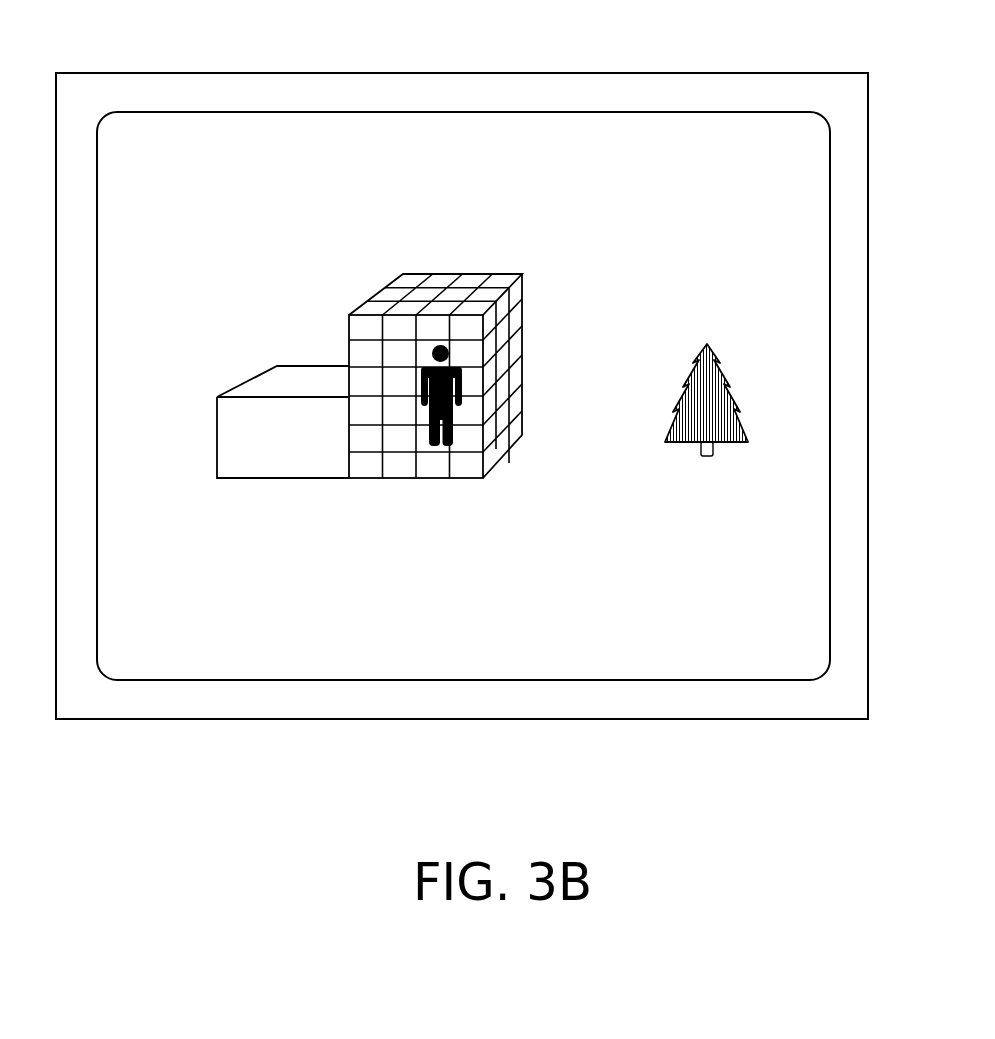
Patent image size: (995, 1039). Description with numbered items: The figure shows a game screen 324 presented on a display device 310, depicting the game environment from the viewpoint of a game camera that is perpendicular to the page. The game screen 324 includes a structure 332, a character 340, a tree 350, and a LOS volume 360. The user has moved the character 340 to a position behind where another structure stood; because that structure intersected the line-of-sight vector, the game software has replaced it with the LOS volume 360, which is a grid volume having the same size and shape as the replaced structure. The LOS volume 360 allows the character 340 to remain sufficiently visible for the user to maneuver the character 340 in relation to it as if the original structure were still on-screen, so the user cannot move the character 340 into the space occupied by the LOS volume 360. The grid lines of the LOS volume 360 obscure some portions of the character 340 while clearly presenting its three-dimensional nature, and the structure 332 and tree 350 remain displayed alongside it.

The display device 310 is at (665, 720).
The game screen 324 is at (790, 651).
The structure 332 is at (283, 478).
The character 340 is at (452, 418).
The tree 350 is at (728, 378).
The LOS volume 360 is at (413, 478).